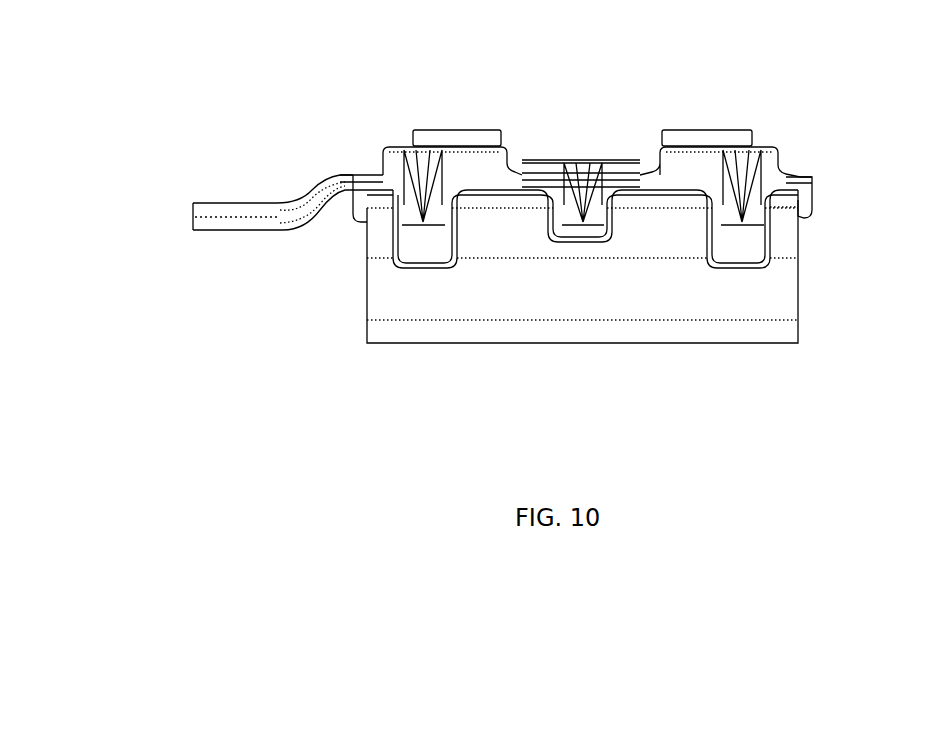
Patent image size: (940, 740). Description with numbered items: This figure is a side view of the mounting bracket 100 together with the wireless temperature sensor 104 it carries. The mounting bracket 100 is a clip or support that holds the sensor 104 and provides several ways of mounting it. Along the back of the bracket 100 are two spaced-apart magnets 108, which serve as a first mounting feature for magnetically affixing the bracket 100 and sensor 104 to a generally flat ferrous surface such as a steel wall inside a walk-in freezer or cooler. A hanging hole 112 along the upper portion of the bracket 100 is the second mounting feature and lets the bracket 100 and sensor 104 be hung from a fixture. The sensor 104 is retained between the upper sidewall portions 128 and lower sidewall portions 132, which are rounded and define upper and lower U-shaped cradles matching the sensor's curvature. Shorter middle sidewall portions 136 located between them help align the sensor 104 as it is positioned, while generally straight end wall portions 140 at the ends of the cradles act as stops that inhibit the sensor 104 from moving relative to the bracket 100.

The mounting bracket 100 is at (800, 131).
The wireless temperature sensor 104 is at (353, 295).
The magnets 108 is at (457, 128).
The hanging hole 112 is at (193, 215).
The upper sidewall portions 128 is at (417, 268).
The lower sidewall portions 132 is at (718, 268).
The middle sidewall portions 136 is at (565, 244).
The end wall portions 140 is at (811, 216).